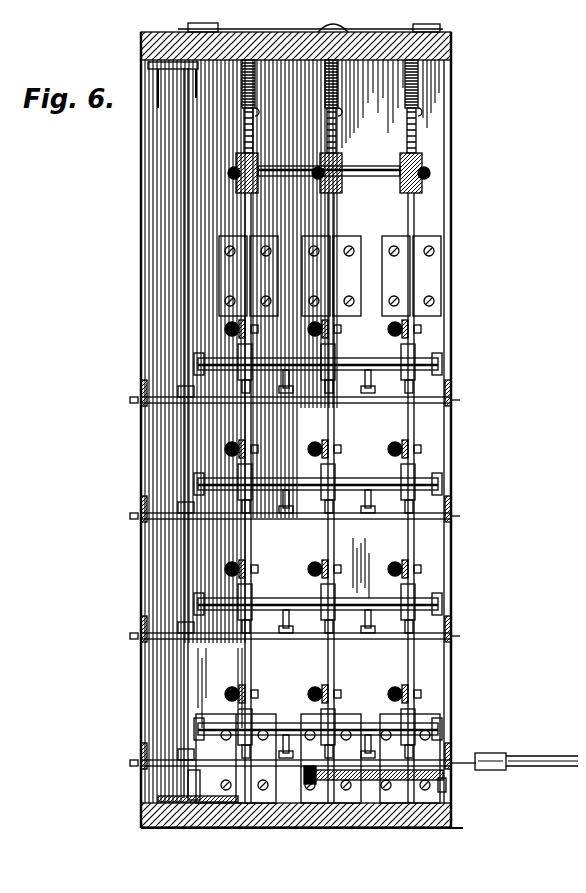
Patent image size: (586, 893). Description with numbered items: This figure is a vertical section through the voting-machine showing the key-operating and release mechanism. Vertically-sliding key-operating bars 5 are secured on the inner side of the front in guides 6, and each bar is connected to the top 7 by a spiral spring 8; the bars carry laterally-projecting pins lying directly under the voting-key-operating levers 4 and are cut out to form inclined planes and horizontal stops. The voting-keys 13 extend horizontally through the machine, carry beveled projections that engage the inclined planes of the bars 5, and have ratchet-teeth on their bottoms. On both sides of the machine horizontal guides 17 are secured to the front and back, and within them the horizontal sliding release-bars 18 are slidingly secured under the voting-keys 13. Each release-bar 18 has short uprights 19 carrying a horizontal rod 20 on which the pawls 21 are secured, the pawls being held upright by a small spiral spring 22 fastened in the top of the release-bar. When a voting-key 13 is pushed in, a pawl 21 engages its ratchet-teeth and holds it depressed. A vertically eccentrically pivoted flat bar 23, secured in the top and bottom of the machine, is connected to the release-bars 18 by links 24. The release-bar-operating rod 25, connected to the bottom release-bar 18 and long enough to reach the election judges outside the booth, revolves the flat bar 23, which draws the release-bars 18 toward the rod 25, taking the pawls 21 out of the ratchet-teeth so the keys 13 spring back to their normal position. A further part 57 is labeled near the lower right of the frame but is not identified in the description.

The voting-key-operating levers 4 is at (236, 130).
The vertically-sliding key-operating bars 5 is at (246, 214).
The guides 6 is at (264, 274).
The top 7 is at (444, 37).
The spiral spring 8 is at (249, 87).
The voting-keys 13 is at (412, 323).
The horizontal guides 17 is at (134, 386).
The horizontal sliding release-bars 18 is at (450, 392).
The short uprights 19 is at (434, 356).
The horizontal rod 20 is at (421, 352).
The pawls 21 is at (248, 352).
The small spiral spring 22 is at (233, 375).
The vertically eccentrically pivoted flat bar 23 is at (176, 296).
The links 24 is at (176, 399).
The release-bar-operating rod 25 is at (532, 762).
The corner bracket 57 is at (437, 783).